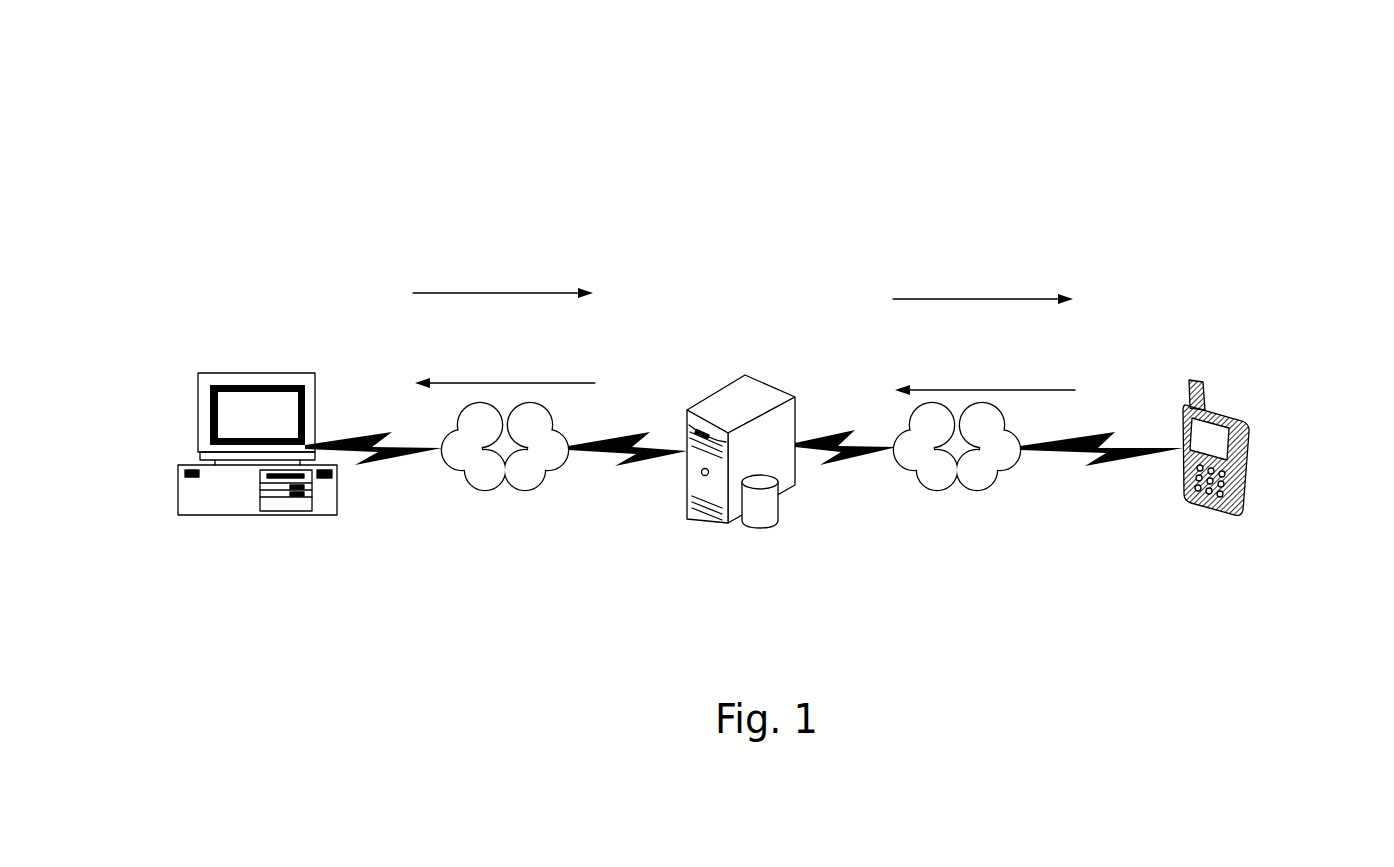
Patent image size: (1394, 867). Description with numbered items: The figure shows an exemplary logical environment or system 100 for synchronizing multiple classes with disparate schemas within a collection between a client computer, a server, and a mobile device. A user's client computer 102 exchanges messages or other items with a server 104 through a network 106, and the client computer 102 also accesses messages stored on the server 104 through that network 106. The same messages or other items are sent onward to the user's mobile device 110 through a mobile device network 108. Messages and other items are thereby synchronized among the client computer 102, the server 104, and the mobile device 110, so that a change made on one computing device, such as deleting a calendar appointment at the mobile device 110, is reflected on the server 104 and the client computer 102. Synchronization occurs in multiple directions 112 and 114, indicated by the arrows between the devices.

The system 100 is at (312, 170).
The client computer 102 is at (257, 373).
The server 104 is at (750, 372).
The network 106 is at (520, 490).
The mobile device network 108 is at (975, 490).
The mobile device 110 is at (1250, 428).
The synchronization direction 112 is at (500, 293).
The synchronization direction 114 is at (990, 299).